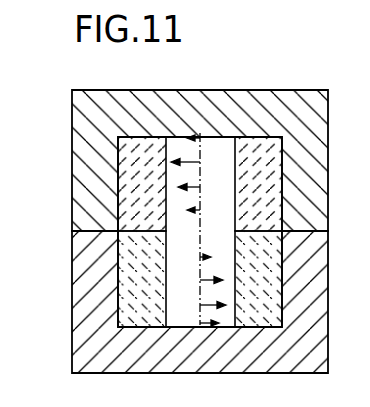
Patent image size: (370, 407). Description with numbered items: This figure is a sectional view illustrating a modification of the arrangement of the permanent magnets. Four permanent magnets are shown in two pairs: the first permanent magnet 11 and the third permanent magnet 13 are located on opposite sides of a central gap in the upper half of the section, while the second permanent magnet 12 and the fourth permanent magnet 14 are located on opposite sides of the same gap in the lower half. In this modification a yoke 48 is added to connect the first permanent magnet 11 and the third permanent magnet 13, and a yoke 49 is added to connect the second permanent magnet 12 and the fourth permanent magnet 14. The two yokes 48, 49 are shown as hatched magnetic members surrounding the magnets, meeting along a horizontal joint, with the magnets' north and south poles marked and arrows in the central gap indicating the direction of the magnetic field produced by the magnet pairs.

The first permanent magnet 11 is at (281, 158).
The second permanent magnet 12 is at (276, 294).
The third permanent magnet 13 is at (120, 209).
The fourth permanent magnet 14 is at (122, 254).
The yoke 48 is at (82, 129).
The yoke 49 is at (79, 315).